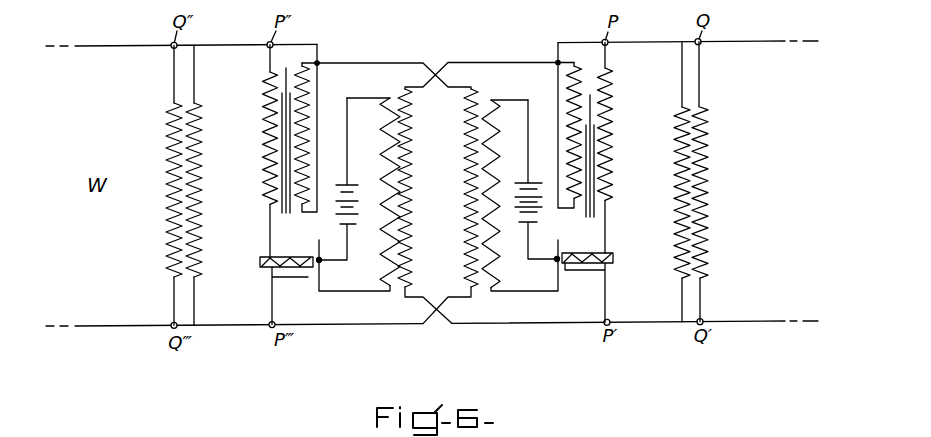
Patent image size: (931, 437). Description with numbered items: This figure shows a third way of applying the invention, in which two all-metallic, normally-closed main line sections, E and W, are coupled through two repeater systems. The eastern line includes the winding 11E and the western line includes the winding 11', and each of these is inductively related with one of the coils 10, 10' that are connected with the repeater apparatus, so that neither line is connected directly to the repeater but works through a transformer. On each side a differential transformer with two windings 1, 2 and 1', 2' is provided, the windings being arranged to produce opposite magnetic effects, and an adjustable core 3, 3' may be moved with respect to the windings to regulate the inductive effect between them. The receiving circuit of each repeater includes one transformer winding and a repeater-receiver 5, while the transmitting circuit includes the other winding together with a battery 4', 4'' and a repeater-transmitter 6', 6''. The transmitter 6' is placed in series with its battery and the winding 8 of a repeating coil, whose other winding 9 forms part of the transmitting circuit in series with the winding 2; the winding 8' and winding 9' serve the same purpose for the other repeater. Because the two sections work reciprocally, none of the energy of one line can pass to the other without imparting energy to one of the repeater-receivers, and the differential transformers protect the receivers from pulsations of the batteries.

The transformer winding 1 is at (612, 147).
The transformer winding 1' is at (253, 151).
The transformer winding 2 is at (576, 125).
The transformer winding 2' is at (317, 128).
The adjustable core 3 is at (609, 156).
The adjustable core 3' is at (288, 130).
The battery 4' is at (526, 179).
The battery 4'' is at (345, 189).
The repeater-receiver 5 is at (261, 266).
The repeater-transmitter 6' is at (525, 265).
The repeater-transmitter 6'' is at (354, 279).
The repeating coil winding 8 is at (505, 194).
The repeating coil winding 8' is at (389, 192).
The repeating coil winding 9 is at (458, 188).
The repeating coil winding 9' is at (417, 188).
The transformer coil 10 is at (665, 182).
The transformer coil 10' is at (211, 185).
The line winding 11' is at (155, 185).
The line winding 11E is at (722, 182).